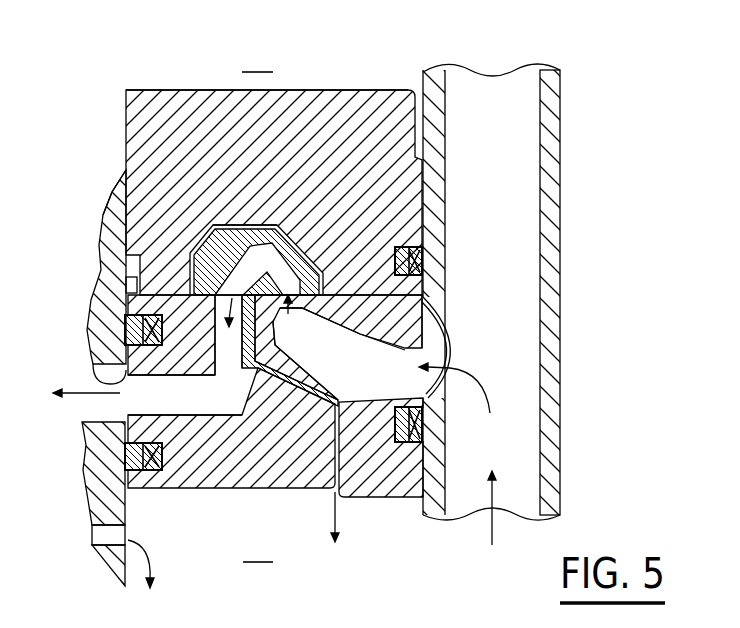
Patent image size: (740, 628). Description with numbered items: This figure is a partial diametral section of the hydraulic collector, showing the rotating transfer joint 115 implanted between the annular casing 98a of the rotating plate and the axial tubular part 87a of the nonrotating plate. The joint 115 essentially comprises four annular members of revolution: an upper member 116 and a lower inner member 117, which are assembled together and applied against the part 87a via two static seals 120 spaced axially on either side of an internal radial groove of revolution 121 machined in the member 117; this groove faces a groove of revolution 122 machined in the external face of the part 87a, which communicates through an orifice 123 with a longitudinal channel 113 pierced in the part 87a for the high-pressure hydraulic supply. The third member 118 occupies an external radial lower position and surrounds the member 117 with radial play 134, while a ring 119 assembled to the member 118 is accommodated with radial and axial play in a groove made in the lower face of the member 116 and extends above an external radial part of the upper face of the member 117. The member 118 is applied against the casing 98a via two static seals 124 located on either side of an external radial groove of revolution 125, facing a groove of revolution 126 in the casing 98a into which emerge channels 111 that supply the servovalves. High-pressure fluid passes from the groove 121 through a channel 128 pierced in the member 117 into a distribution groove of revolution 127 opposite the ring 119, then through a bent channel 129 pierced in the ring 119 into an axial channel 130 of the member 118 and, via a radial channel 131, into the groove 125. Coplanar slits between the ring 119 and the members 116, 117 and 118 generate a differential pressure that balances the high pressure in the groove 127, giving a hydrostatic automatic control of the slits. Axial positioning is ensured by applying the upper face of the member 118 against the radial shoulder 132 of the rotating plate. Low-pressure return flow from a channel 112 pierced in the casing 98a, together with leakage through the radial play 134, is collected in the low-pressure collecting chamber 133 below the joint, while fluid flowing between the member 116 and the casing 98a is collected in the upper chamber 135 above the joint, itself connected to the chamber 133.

The axial tubular part 87a is at (550, 118).
The annular casing 98a is at (108, 215).
The channels 111 is at (105, 365).
The channel 112 is at (103, 533).
The longitudinal channel 113 is at (527, 437).
The rotating transfer joint 115 is at (312, 86).
The annular member 116 is at (372, 97).
The annular member 117 is at (370, 487).
The annular member 118 is at (232, 477).
The ring 119 is at (190, 258).
The static seals 120 is at (412, 264).
The internal radial groove of revolution 121 is at (428, 305).
The groove of revolution 122 is at (454, 388).
The orifice 123 is at (443, 353).
The static seals 124 is at (125, 337).
The external radial groove of revolution 125 is at (100, 406).
The groove of revolution 126 is at (107, 372).
The distribution groove of revolution 127 is at (298, 305).
The channel 128 is at (440, 340).
The bent channel 129 is at (330, 238).
The channel 130 is at (228, 378).
The radial channel 131 is at (168, 402).
The radial shoulder 132 is at (128, 285).
The low-pressure collecting chamber 133 is at (258, 552).
The radial play 134 is at (330, 452).
The upper chamber 135 is at (257, 61).